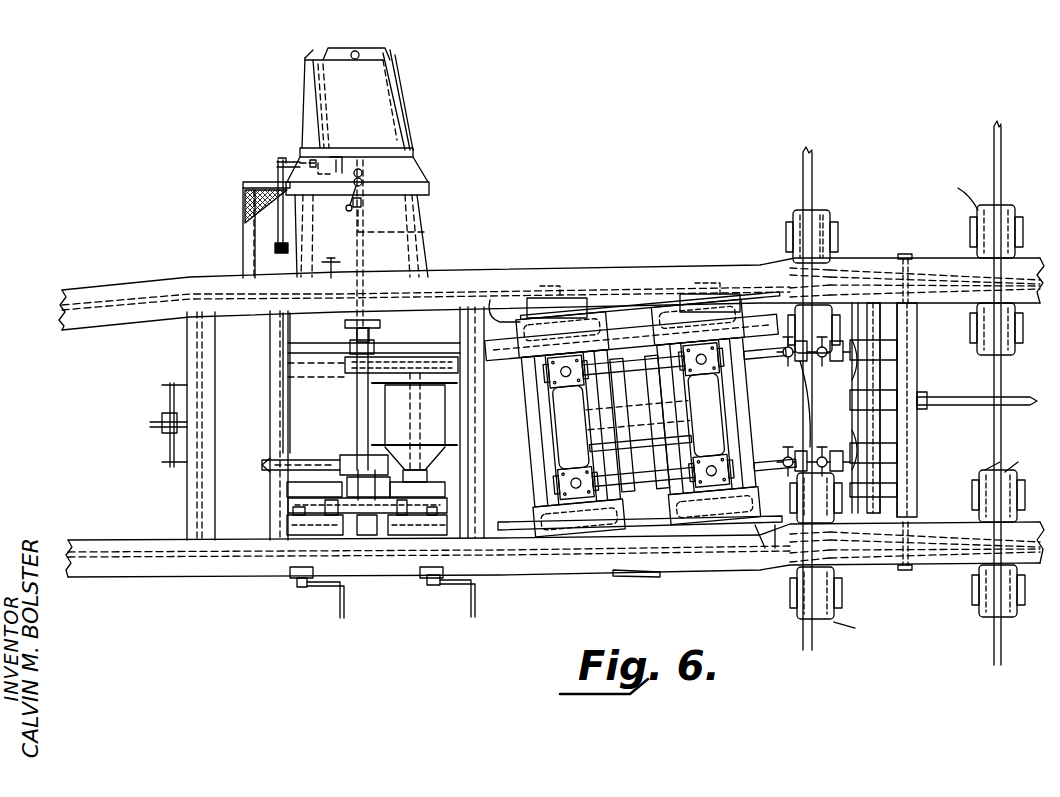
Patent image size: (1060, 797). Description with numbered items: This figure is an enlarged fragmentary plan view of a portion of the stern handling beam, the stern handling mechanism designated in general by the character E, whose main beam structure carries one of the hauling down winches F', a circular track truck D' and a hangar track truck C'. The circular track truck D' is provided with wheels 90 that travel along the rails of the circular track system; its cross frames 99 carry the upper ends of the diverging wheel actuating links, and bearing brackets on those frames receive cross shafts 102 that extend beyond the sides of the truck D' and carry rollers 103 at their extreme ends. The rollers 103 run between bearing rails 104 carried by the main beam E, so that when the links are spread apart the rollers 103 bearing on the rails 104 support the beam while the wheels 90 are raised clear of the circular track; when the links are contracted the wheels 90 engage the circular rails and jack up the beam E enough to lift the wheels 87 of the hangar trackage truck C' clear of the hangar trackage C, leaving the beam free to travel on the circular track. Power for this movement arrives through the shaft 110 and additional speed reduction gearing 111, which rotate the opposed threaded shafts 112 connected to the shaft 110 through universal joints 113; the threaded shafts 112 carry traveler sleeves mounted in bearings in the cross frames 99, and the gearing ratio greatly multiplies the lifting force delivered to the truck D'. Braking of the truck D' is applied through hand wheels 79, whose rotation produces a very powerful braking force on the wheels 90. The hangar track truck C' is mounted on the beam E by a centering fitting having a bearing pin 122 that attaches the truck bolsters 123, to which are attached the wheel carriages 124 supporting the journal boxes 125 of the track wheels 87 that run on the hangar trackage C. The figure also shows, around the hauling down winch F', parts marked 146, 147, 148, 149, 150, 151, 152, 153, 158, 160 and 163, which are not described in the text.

The hand wheels 79 is at (640, 578).
The track wheels 87 is at (828, 211).
The wheels 90 is at (503, 345).
The cross frames 99 is at (558, 424).
The cross shafts 102 is at (540, 470).
The rollers 103 is at (582, 300).
The bearing rails 104 is at (490, 296).
The shaft 110 is at (985, 388).
The speed reduction gearing 111 is at (917, 375).
The opposed threaded shafts 112 is at (638, 421).
The universal joints 113 is at (826, 418).
The bearing pin 122 is at (912, 260).
The truck bolsters 123 is at (864, 272).
The wheel carriages 124 is at (943, 407).
The journal boxes 125 is at (840, 235).
The clamp 146 is at (150, 425).
The cylinder 147 is at (407, 399).
The tower 148 is at (357, 189).
The lever 149 is at (420, 205).
The shaft 150 is at (420, 229).
The plate 151 is at (345, 370).
The bearing block 152 is at (442, 349).
The bracket 153 is at (332, 596).
The bolt 158 is at (370, 552).
The funnel 160 is at (398, 456).
The stud 163 is at (350, 255).
The hangar trackage C is at (914, 401).
The hangar trackage trucks C' is at (988, 324).
The circular track trucks D' is at (640, 423).
The main handling beam E is at (620, 270).
The hauling down winches F' is at (371, 383).